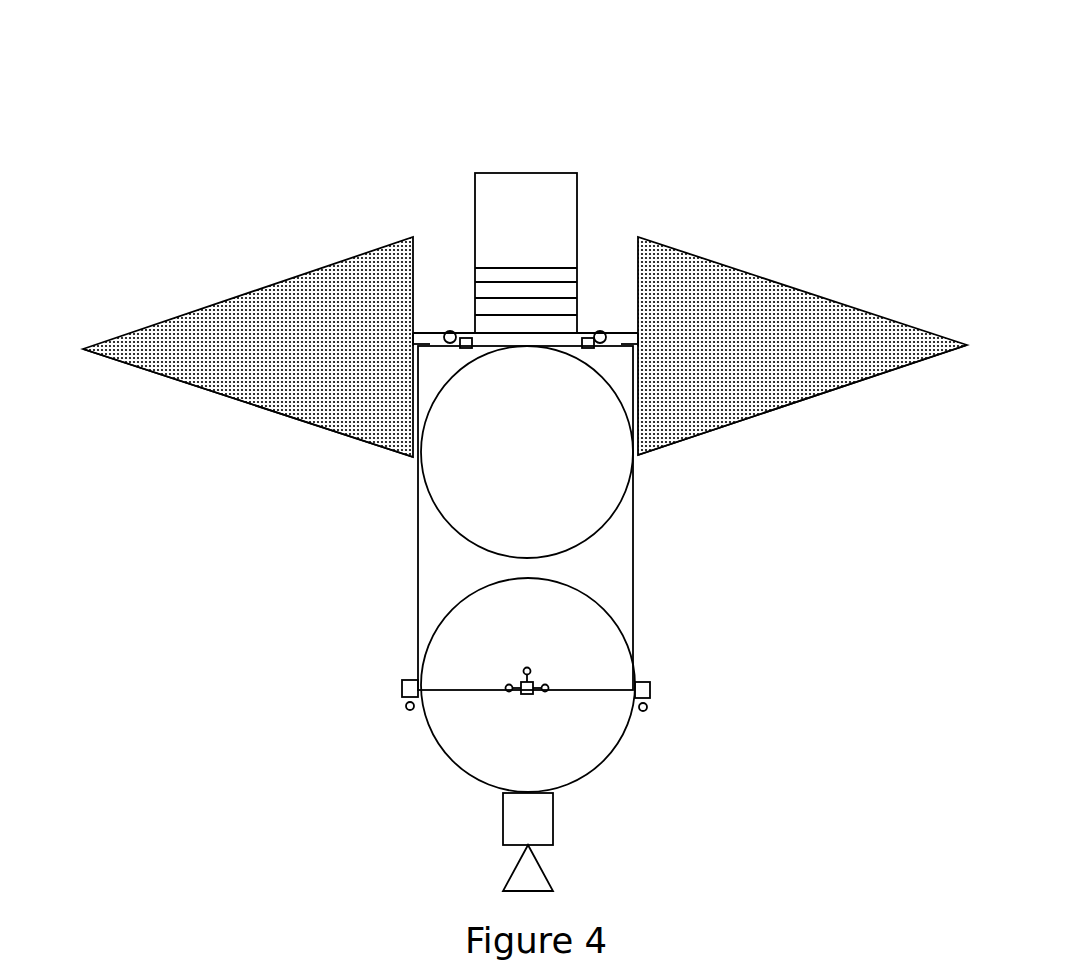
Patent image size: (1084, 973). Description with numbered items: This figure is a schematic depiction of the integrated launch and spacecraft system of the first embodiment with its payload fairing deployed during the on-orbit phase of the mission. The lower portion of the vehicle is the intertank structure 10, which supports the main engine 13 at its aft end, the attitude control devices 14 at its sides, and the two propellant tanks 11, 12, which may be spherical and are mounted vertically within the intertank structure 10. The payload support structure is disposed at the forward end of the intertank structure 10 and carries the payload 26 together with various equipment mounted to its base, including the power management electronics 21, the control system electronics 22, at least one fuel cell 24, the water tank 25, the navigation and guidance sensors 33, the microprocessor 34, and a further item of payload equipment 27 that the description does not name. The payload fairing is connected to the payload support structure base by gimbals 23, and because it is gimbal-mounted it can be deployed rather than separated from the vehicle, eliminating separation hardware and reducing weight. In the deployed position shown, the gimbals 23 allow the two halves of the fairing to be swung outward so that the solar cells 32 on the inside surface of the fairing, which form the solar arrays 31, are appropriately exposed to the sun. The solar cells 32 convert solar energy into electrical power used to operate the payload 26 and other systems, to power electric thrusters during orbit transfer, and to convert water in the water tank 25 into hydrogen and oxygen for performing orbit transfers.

The intertank structure 10 is at (634, 563).
The propellant tank 11 is at (610, 520).
The propellant tank 12 is at (604, 607).
The main engine 13 is at (555, 820).
The attitude control devices 14 is at (658, 690).
The power management electronics 21 is at (465, 323).
The control system electronics 22 is at (583, 323).
The gimbals 23 is at (435, 323).
The fuel cell 24 is at (561, 326).
The water tank 25 is at (548, 311).
The payload 26 is at (472, 218).
The stacked panel segment 27 is at (488, 265).
The solar arrays 31 is at (255, 410).
The solar cells 32 is at (277, 310).
The navigation and guidance sensors 33 is at (532, 295).
The microprocessor 34 is at (515, 280).